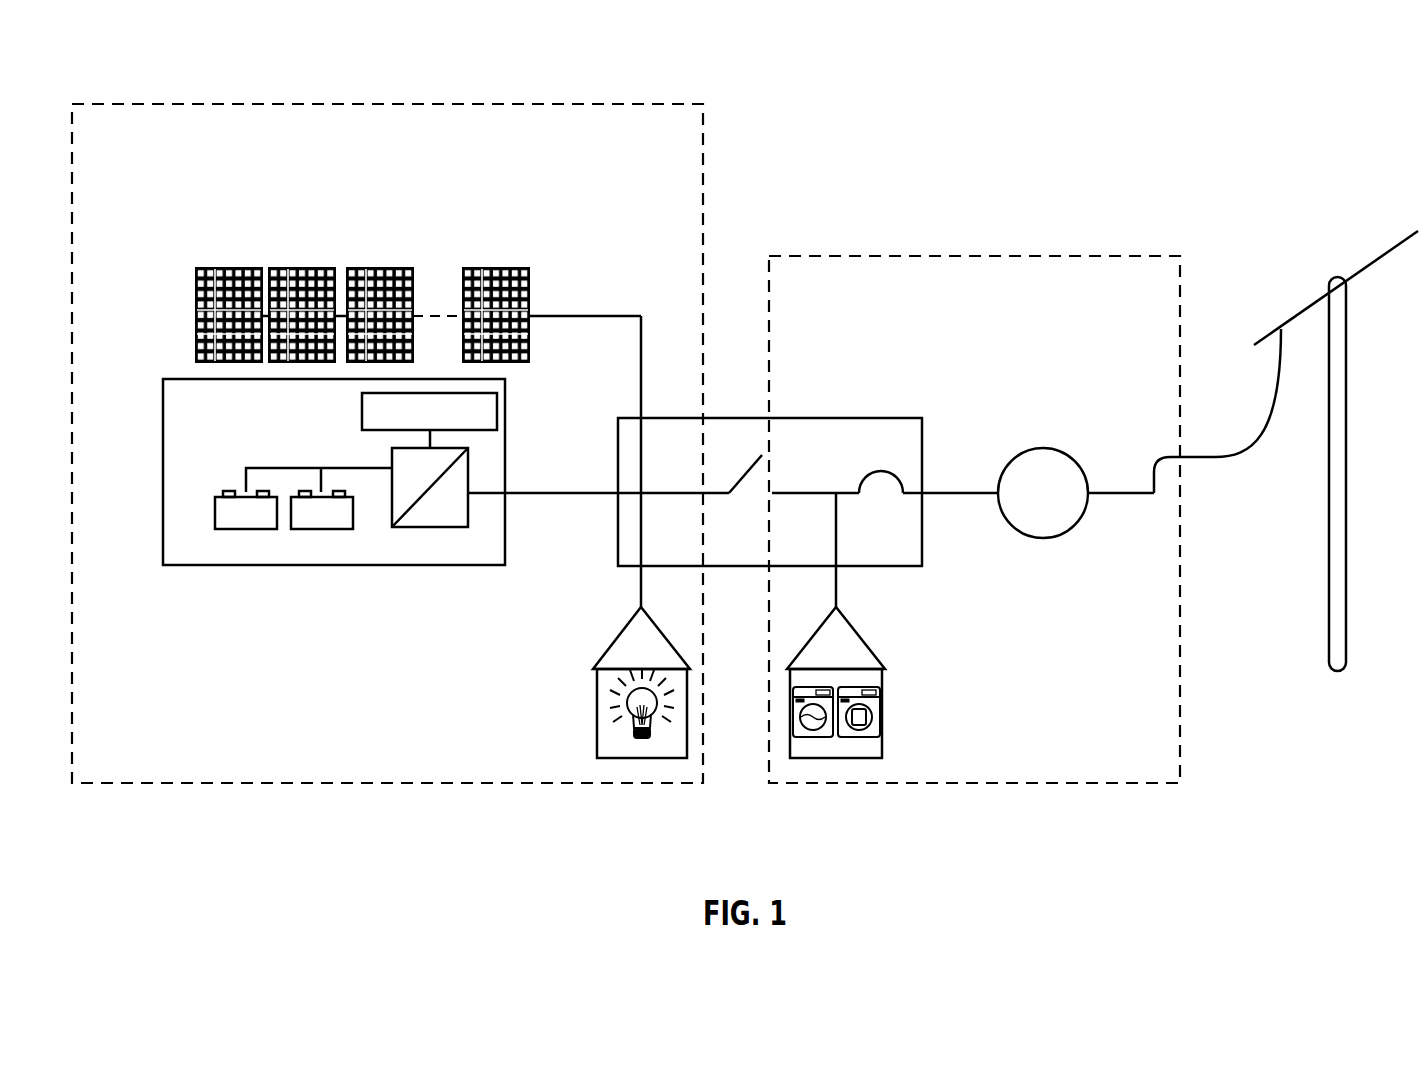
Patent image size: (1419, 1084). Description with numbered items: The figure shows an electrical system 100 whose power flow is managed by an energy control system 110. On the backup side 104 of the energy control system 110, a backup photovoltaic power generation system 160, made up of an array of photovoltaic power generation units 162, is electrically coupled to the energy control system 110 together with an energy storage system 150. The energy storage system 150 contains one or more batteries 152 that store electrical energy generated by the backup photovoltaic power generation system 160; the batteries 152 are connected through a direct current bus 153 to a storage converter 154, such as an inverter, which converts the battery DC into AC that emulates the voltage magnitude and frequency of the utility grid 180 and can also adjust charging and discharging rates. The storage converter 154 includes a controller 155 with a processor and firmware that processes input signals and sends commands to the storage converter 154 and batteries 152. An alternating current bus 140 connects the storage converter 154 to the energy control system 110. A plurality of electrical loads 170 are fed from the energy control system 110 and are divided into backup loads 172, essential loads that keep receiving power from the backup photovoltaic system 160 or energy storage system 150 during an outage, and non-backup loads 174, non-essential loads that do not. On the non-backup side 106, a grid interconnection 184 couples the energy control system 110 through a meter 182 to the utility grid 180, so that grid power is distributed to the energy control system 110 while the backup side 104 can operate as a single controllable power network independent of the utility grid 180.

The electrical system 100 is at (1214, 116).
The backup side 104 is at (124, 104).
The non-backup side 106 is at (921, 256).
The energy control system 110 is at (780, 418).
The alternating current (AC) bus 140 is at (577, 495).
The energy storage system 150 is at (389, 566).
The batteries 152 is at (246, 529).
The direct current (DC) bus 153 is at (268, 468).
The storage converter 154 is at (447, 527).
The controller 155 is at (498, 413).
The backup photovoltaic (PV) power generation system 160 is at (418, 251).
The power generation unit 162 is at (226, 268).
The plurality of electrical loads 170 is at (739, 733).
The backup loads 172 is at (615, 640).
The non-backup loads 174 is at (860, 640).
The utility grid 180 is at (1283, 260).
The meter 182 is at (1040, 448).
The grid interconnection 184 is at (953, 493).